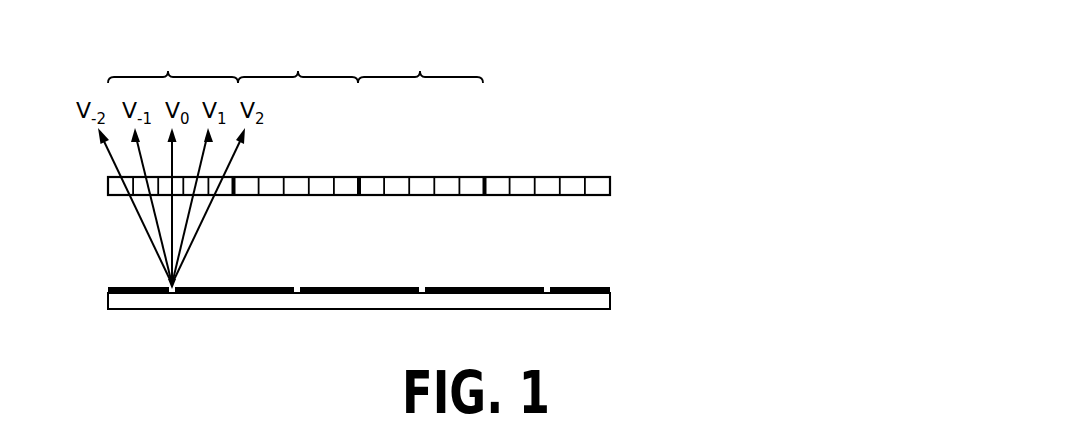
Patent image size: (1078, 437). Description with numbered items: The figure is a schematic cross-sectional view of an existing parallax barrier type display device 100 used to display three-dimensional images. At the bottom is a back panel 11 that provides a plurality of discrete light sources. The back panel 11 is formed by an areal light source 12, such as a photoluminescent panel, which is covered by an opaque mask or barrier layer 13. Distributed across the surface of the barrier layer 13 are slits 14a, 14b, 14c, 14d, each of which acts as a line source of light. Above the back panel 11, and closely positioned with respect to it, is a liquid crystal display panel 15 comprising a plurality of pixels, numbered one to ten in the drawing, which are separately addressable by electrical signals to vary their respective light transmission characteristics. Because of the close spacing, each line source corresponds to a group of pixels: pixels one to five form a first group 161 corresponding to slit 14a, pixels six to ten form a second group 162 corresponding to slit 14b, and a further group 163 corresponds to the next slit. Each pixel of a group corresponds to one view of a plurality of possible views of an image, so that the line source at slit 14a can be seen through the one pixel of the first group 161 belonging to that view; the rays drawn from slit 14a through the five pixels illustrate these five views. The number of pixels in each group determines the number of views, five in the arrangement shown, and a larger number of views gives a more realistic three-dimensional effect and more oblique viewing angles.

The display device 100 is at (612, 146).
The back panel 11 is at (485, 324).
The areal light source 12 is at (135, 300).
The barrier layer 13 is at (582, 284).
The slit 14a is at (180, 282).
The slit 14b is at (293, 275).
The slit 14c is at (420, 275).
The slit 14d is at (543, 275).
The liquid crystal display panel 15 is at (98, 187).
The first group of pixels 161 is at (173, 64).
The second group of pixels 162 is at (298, 64).
The third group of pixels 163 is at (420, 64).